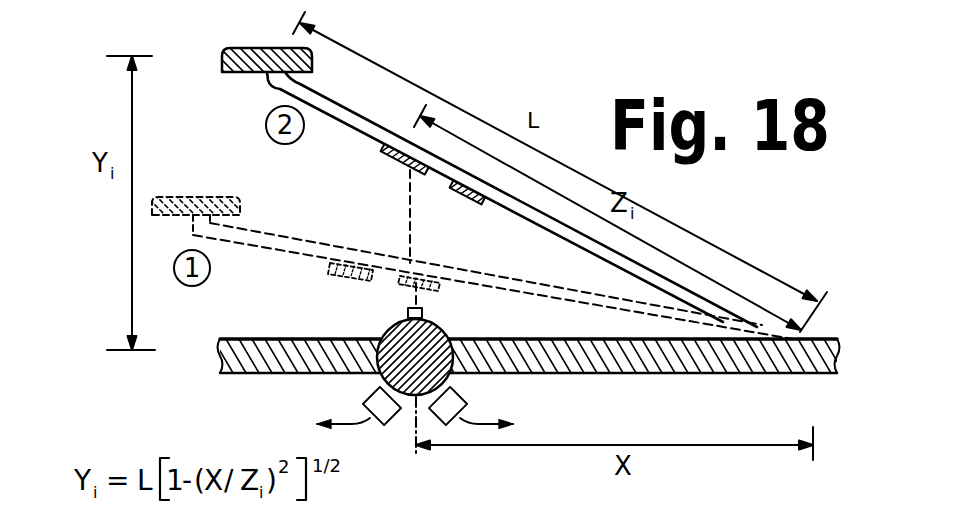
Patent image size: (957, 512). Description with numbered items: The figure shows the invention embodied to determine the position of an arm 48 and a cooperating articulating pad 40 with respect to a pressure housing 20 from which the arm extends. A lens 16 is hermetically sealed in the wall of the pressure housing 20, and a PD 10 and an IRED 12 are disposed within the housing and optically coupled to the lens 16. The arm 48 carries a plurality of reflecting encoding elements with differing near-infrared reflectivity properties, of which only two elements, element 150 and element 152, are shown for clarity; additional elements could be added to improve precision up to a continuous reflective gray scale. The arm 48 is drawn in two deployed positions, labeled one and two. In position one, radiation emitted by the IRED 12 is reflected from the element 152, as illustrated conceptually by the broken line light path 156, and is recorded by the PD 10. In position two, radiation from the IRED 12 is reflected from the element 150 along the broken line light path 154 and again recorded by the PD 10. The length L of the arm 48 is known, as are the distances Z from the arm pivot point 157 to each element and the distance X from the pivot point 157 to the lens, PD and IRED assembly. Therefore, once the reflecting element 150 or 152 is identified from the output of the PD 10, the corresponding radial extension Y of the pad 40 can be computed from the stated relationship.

The PD 10 is at (362, 397).
The IRED 12 is at (465, 393).
The lens 16 is at (452, 333).
The pressure housing 20 is at (637, 374).
The articulating pad 40 is at (243, 72).
The arm 48 is at (548, 221).
The reflecting element 150 is at (393, 161).
The reflecting element 152 is at (463, 201).
The light path 154 is at (408, 227).
The light path 156 is at (407, 303).
The arm pivot point 157 is at (800, 337).